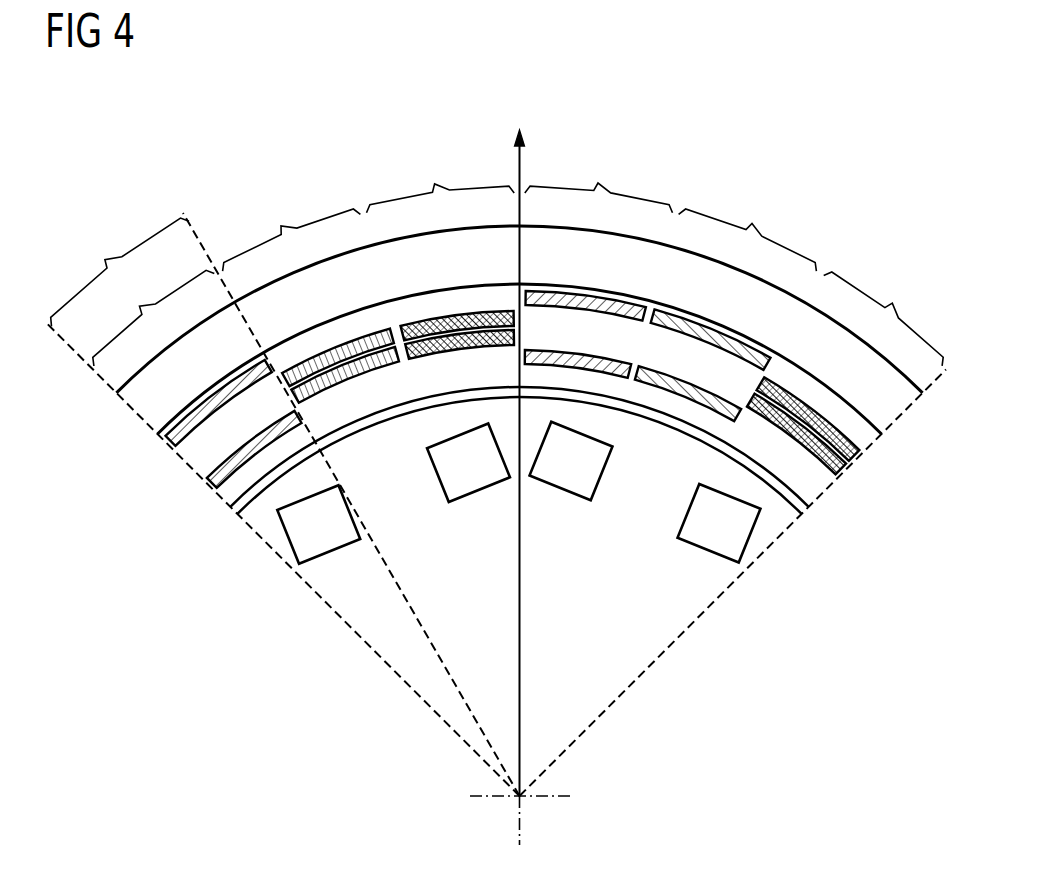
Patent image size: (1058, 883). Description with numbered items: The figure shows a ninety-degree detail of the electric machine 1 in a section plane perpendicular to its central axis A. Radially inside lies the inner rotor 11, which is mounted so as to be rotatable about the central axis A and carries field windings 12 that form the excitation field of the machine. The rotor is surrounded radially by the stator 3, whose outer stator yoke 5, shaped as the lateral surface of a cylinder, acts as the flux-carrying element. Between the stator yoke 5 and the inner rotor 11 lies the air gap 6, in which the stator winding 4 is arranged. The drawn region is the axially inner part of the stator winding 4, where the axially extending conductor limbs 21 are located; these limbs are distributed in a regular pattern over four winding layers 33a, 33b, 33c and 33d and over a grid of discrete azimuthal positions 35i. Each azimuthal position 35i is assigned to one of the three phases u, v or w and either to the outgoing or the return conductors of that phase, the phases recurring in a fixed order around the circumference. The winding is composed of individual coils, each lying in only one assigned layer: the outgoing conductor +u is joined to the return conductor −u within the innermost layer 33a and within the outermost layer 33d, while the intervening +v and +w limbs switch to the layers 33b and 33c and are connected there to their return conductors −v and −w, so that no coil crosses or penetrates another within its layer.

The electric machine 1 is at (252, 117).
The stator 3 is at (193, 553).
The stator winding 4 is at (152, 445).
The stator yoke 5 is at (900, 398).
The air gap 6 is at (673, 418).
The inner rotor 11 is at (482, 835).
The field windings 12 is at (565, 480).
The axial conductor limbs 21 is at (668, 388).
The winding layer 33a is at (835, 487).
The winding layer 33b is at (850, 477).
The winding layer 33c is at (863, 462).
The winding layer 33d is at (877, 447).
The azimuthal positions 35i is at (120, 272).
The central axis A is at (522, 798).